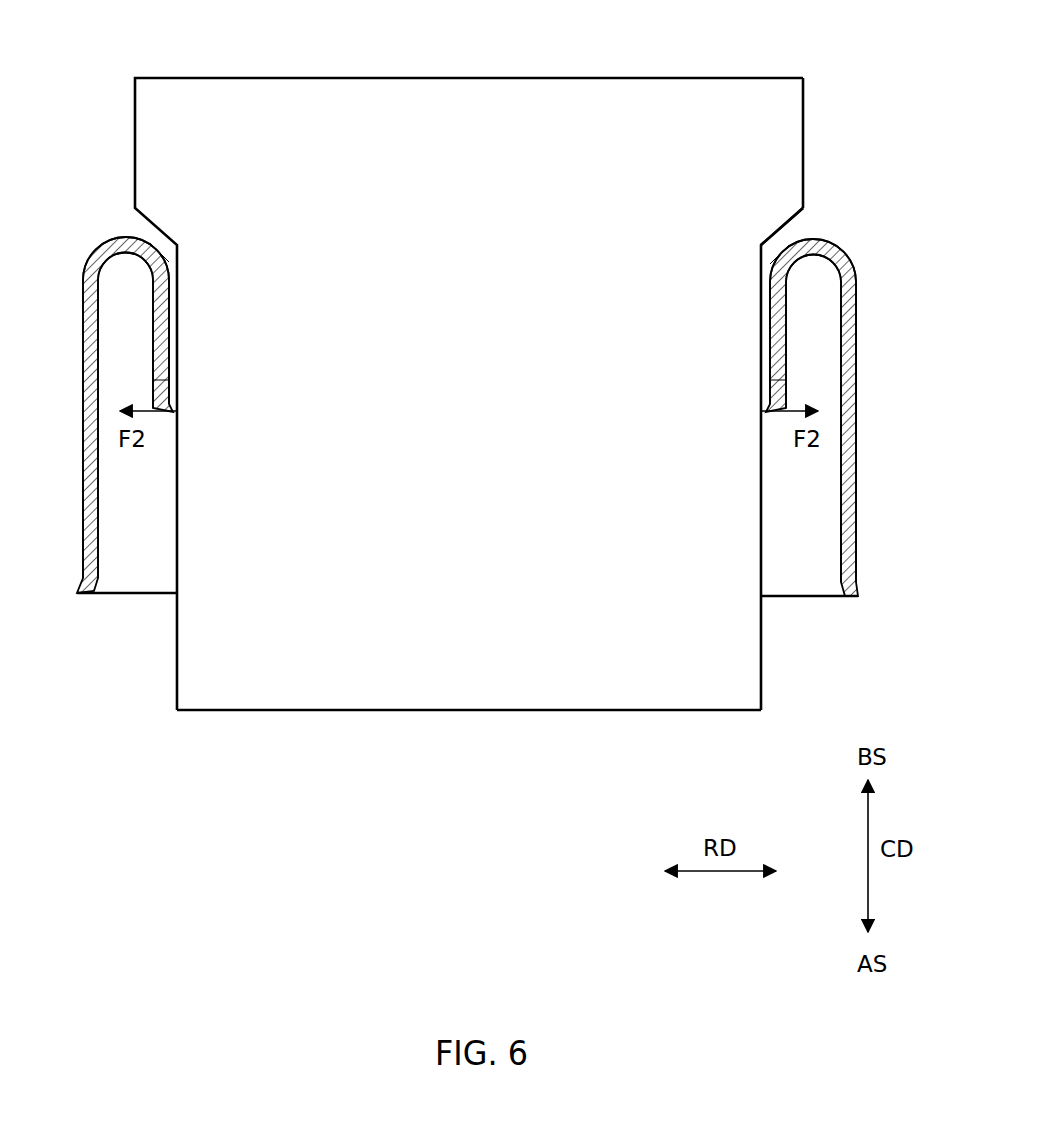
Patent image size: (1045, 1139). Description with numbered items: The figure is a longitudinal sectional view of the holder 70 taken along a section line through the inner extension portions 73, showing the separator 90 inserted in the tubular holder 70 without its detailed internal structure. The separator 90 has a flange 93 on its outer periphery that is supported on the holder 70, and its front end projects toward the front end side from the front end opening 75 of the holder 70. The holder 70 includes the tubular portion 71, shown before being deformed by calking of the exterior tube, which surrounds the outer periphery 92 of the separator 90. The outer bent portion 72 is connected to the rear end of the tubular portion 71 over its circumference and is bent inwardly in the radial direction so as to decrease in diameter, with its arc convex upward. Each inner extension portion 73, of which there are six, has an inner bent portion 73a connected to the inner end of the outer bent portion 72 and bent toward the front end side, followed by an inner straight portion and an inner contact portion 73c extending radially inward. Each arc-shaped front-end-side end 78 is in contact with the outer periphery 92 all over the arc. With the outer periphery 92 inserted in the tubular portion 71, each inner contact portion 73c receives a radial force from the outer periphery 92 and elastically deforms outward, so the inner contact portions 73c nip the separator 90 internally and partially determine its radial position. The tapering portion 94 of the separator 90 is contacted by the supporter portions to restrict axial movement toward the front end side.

The separator 90 is at (638, 76).
The flange 93 is at (804, 116).
The tapering portion 94 is at (796, 216).
The outer periphery 92 is at (762, 690).
The holder 70 is at (890, 308).
The tubular portion 71 is at (83, 405).
The outer bent portion 72 is at (110, 250).
The inner extension portion 73 is at (150, 335).
The inner bent portion 73a is at (165, 240).
The inner contact portion 73c is at (178, 373).
The front-end-side end 78 is at (179, 420).
The front end opening 75 is at (823, 598).